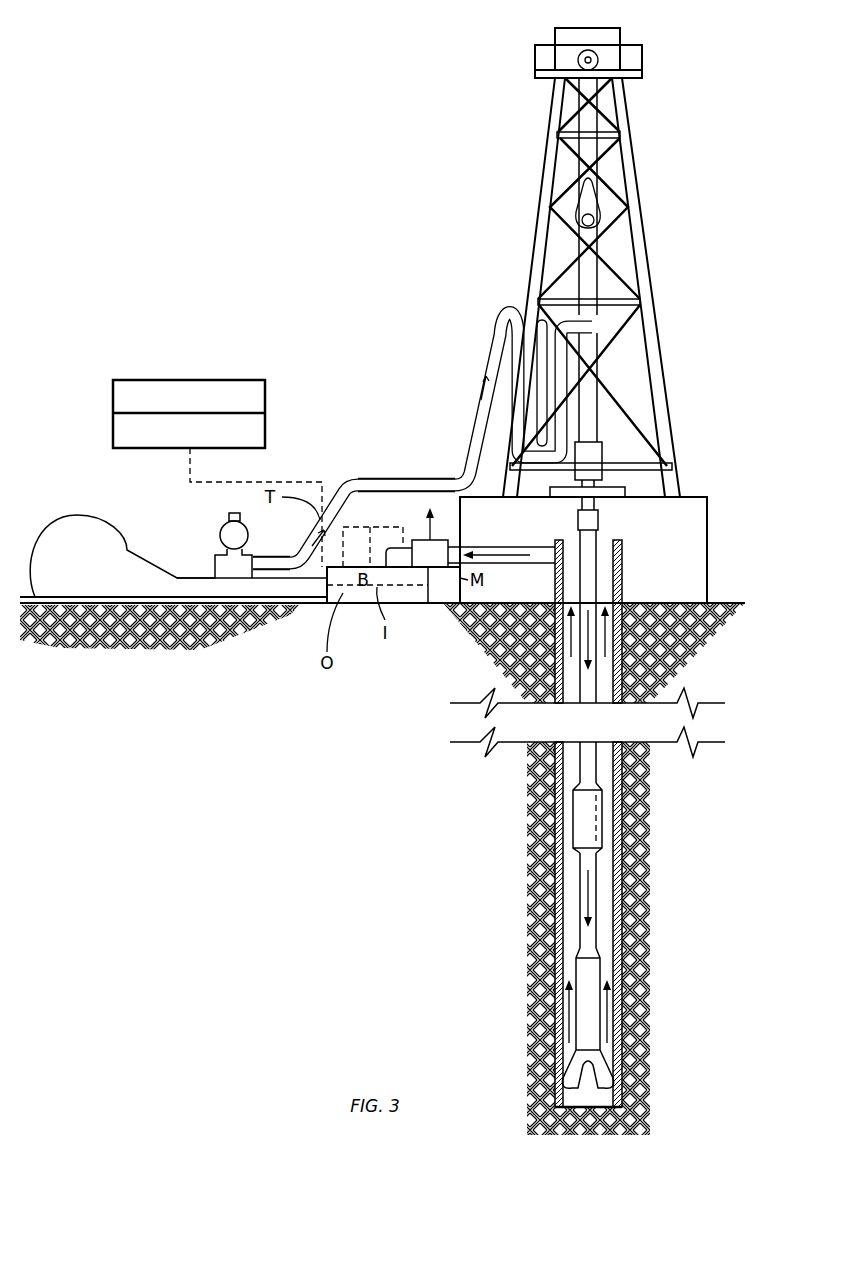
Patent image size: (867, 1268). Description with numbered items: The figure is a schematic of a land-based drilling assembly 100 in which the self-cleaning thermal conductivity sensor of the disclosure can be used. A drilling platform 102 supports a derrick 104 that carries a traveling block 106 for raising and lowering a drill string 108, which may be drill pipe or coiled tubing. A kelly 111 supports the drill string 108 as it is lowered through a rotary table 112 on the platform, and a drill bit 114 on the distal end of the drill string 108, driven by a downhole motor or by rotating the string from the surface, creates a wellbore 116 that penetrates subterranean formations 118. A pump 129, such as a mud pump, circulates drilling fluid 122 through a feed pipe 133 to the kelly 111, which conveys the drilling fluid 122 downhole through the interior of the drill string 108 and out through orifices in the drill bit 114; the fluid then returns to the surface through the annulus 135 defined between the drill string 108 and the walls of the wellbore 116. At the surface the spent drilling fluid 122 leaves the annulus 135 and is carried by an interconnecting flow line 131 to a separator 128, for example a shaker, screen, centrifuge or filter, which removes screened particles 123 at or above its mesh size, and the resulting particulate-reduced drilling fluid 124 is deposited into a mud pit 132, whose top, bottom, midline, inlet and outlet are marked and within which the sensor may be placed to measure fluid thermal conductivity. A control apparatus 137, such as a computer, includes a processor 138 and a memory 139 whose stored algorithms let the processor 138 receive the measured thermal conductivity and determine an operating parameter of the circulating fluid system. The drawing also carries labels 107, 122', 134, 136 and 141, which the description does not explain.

The drilling assembly 100 is at (250, 192).
The drilling platform 102 is at (709, 506).
The derrick 104 is at (648, 250).
The traveling block 106 is at (596, 214).
The surface 107 is at (745, 601).
The drill string 108 is at (597, 687).
The kelly 111 is at (590, 357).
The rotary table 112 is at (617, 487).
The drill bit 114 is at (612, 1053).
The wellbore 116 is at (610, 823).
The subterranean formations 118 is at (573, 938).
The drilling fluid 122 is at (587, 767).
The treated drilling fluid 122' is at (276, 541).
The screened particles 123 is at (430, 512).
The particulate-reduced drilling fluid 124 is at (388, 548).
The separator 128 is at (430, 553).
The pump 129 is at (141, 555).
The interconnecting flow line 131 is at (533, 547).
The mud pit 132 is at (400, 593).
The feed pipe 133 is at (410, 478).
The treatment unit 134 is at (360, 523).
The annulus 135 is at (607, 900).
The wellbore section 136 is at (755, 673).
The control apparatus 137 is at (185, 396).
The processor 138 is at (189, 430).
The memory 139 is at (189, 396).
The return pipe 141 is at (305, 603).